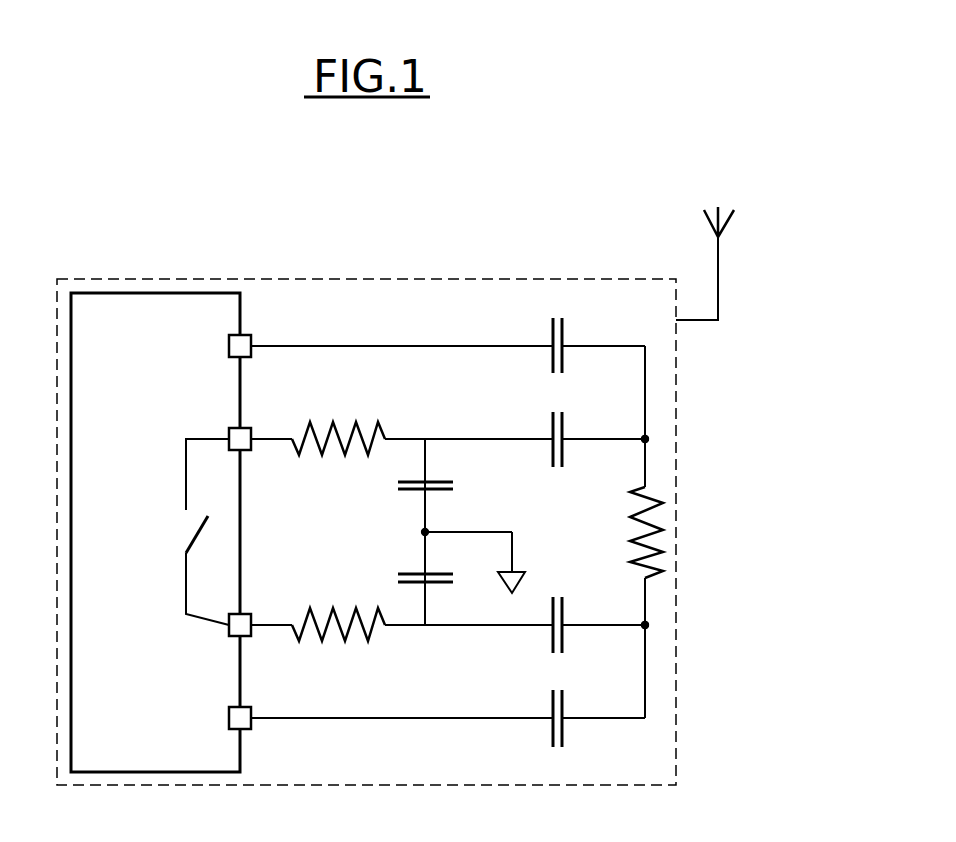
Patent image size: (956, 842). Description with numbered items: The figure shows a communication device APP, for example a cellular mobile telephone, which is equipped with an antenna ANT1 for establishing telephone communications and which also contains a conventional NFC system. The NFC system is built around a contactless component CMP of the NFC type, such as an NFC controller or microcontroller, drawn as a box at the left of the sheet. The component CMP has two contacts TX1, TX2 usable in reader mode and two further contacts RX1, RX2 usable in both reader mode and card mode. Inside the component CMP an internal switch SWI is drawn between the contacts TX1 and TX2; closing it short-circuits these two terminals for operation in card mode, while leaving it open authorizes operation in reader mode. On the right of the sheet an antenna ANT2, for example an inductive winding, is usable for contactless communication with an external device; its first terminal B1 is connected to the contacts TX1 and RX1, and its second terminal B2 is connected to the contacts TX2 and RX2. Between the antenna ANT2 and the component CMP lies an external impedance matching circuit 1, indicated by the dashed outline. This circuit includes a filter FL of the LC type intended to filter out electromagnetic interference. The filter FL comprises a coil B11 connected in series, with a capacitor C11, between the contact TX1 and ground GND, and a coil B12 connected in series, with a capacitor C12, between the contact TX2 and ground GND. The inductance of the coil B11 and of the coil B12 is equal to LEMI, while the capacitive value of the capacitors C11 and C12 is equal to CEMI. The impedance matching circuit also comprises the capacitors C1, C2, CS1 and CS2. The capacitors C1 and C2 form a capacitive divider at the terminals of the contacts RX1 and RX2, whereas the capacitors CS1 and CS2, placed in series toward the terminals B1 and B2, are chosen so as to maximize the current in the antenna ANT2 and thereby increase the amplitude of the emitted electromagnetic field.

The external impedance matching circuit 1 is at (597, 298).
The communication device APP is at (538, 220).
The contactless component CMP is at (153, 290).
The contact RX1 is at (227, 346).
The contact TX1 is at (227, 430).
The contact TX2 is at (227, 632).
The contact RX2 is at (227, 718).
The internal switch SWI is at (184, 532).
The filter FL is at (390, 366).
The inductance LEMI is at (338, 533).
The coil B11 is at (305, 461).
The coil B12 is at (302, 603).
The capacitive value CEMI is at (441, 519).
The capacitor C11 is at (397, 490).
The capacitor C12 is at (397, 577).
The ground GND is at (532, 569).
The capacitor C1 is at (559, 328).
The capacitor CS1 is at (557, 426).
The capacitor CS2 is at (557, 638).
The capacitor C2 is at (559, 733).
The first terminal B1 is at (650, 439).
The second terminal B2 is at (650, 625).
The antenna ANT2 is at (667, 514).
The antenna ANT1 is at (720, 245).